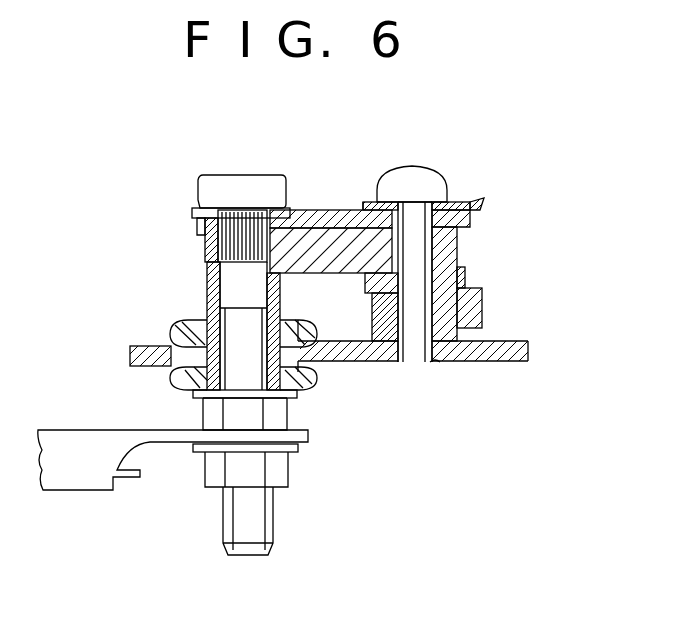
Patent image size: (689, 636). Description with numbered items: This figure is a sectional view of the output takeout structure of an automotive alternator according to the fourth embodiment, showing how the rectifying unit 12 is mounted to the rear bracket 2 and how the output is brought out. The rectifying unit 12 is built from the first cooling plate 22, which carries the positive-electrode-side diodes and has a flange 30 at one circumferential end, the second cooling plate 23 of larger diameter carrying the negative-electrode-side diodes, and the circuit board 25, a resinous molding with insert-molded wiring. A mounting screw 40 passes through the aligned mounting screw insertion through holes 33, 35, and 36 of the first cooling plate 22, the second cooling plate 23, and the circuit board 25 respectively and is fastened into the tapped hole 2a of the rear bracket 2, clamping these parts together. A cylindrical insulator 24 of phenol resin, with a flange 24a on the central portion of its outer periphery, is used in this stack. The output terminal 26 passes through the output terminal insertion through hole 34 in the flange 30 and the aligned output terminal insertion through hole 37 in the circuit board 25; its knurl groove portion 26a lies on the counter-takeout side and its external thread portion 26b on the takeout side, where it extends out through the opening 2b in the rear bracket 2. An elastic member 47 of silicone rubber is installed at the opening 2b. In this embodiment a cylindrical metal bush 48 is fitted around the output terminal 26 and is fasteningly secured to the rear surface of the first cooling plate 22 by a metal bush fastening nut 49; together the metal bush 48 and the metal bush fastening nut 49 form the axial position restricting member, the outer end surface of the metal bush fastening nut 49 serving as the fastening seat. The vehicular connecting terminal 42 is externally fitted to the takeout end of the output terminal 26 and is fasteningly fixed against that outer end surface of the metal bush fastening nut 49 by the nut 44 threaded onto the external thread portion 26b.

The rear bracket 2 is at (494, 362).
The tapped hole 2a is at (425, 360).
The opening 2b is at (300, 322).
The rectifying unit 12 is at (468, 190).
The first cooling plate 22 is at (343, 260).
The second cooling plate 23 is at (372, 318).
The insulator 24 is at (366, 282).
The flange 24a is at (466, 274).
The circuit board 25 is at (482, 205).
The output terminal 26 is at (258, 175).
The knurl groove portion 26a is at (236, 212).
The external thread portion 26b is at (222, 506).
The flange 30 is at (313, 243).
The mounting screw insertion through hole 33 is at (458, 245).
The output terminal insertion through hole 34 is at (205, 250).
The mounting screw insertion through hole 35 is at (483, 306).
The mounting screw insertion through hole 36 is at (470, 218).
The output terminal insertion through hole 37 is at (202, 226).
The mounting screw 40 is at (414, 166).
The vehicular connecting terminal 42 is at (110, 431).
The nut 44 is at (290, 468).
The elastic member 47 is at (180, 376).
The metal bush 48 is at (207, 300).
The metal bush fastening nut 49 is at (297, 399).